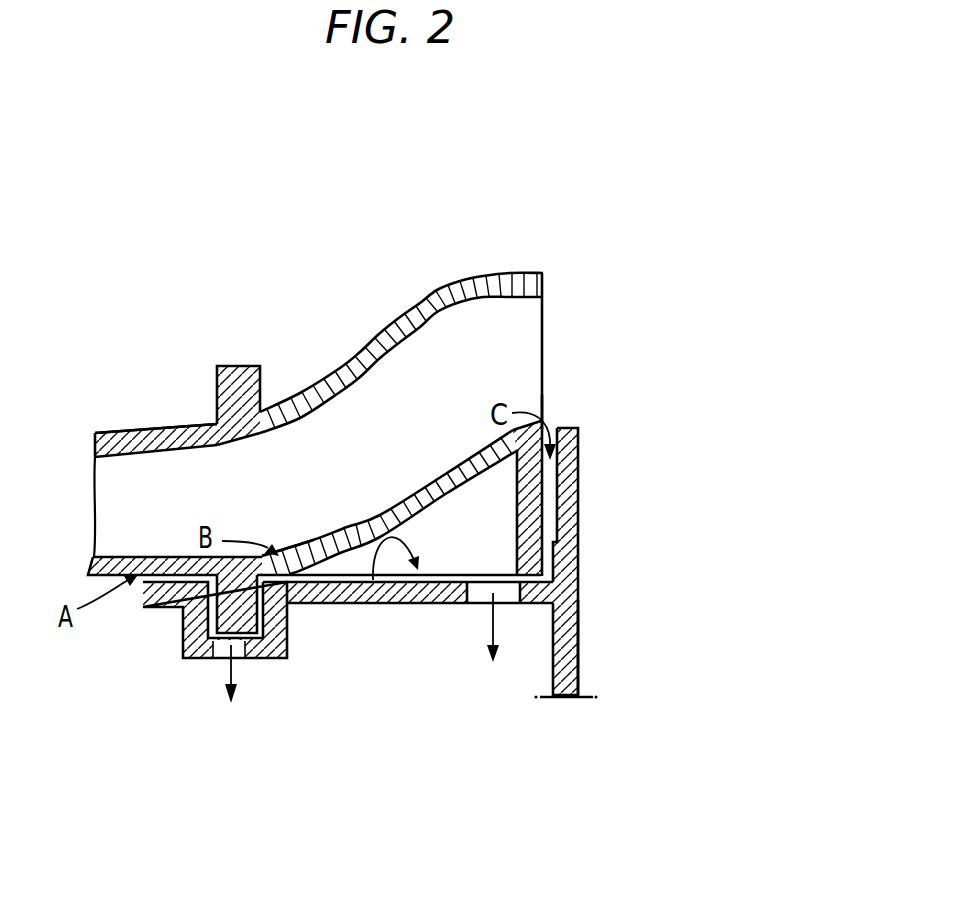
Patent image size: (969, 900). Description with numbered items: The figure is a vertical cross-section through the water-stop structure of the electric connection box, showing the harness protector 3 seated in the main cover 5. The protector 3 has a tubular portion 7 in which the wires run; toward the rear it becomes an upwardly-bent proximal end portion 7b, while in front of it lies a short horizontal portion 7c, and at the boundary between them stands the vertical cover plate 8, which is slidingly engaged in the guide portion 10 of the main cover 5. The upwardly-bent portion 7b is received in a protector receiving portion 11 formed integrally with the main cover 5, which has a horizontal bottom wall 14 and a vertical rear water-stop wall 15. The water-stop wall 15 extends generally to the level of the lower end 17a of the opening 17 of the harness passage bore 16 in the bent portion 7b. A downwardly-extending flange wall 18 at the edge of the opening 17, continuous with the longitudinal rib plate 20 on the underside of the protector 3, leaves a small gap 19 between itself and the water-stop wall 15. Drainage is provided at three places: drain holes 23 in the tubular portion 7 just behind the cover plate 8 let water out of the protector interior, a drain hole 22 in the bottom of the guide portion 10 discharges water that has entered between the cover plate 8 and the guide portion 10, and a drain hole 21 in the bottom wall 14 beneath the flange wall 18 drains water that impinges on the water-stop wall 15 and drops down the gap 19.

The harness protector 3 is at (141, 425).
The main cover 5 is at (587, 655).
The tubular portion 7 is at (113, 430).
The proximal end portion 7b is at (432, 294).
The short horizontal portion 7c is at (190, 437).
The cover plate 8 is at (240, 373).
The guide portion 10 is at (183, 640).
The protector receiving portion 11 is at (373, 582).
The bottom wall portion 14 is at (412, 603).
The water-stop wall 15 is at (568, 502).
The harness passage bore 16 is at (465, 363).
The opening 17 is at (543, 315).
The lower end of the opening 17a is at (530, 410).
The flange wall 18 is at (528, 543).
The gap 19 is at (548, 470).
The rib plate 20 is at (451, 540).
The first drain hole 21 is at (508, 593).
The second drain hole 22 is at (222, 660).
The third drain holes 23 is at (280, 552).